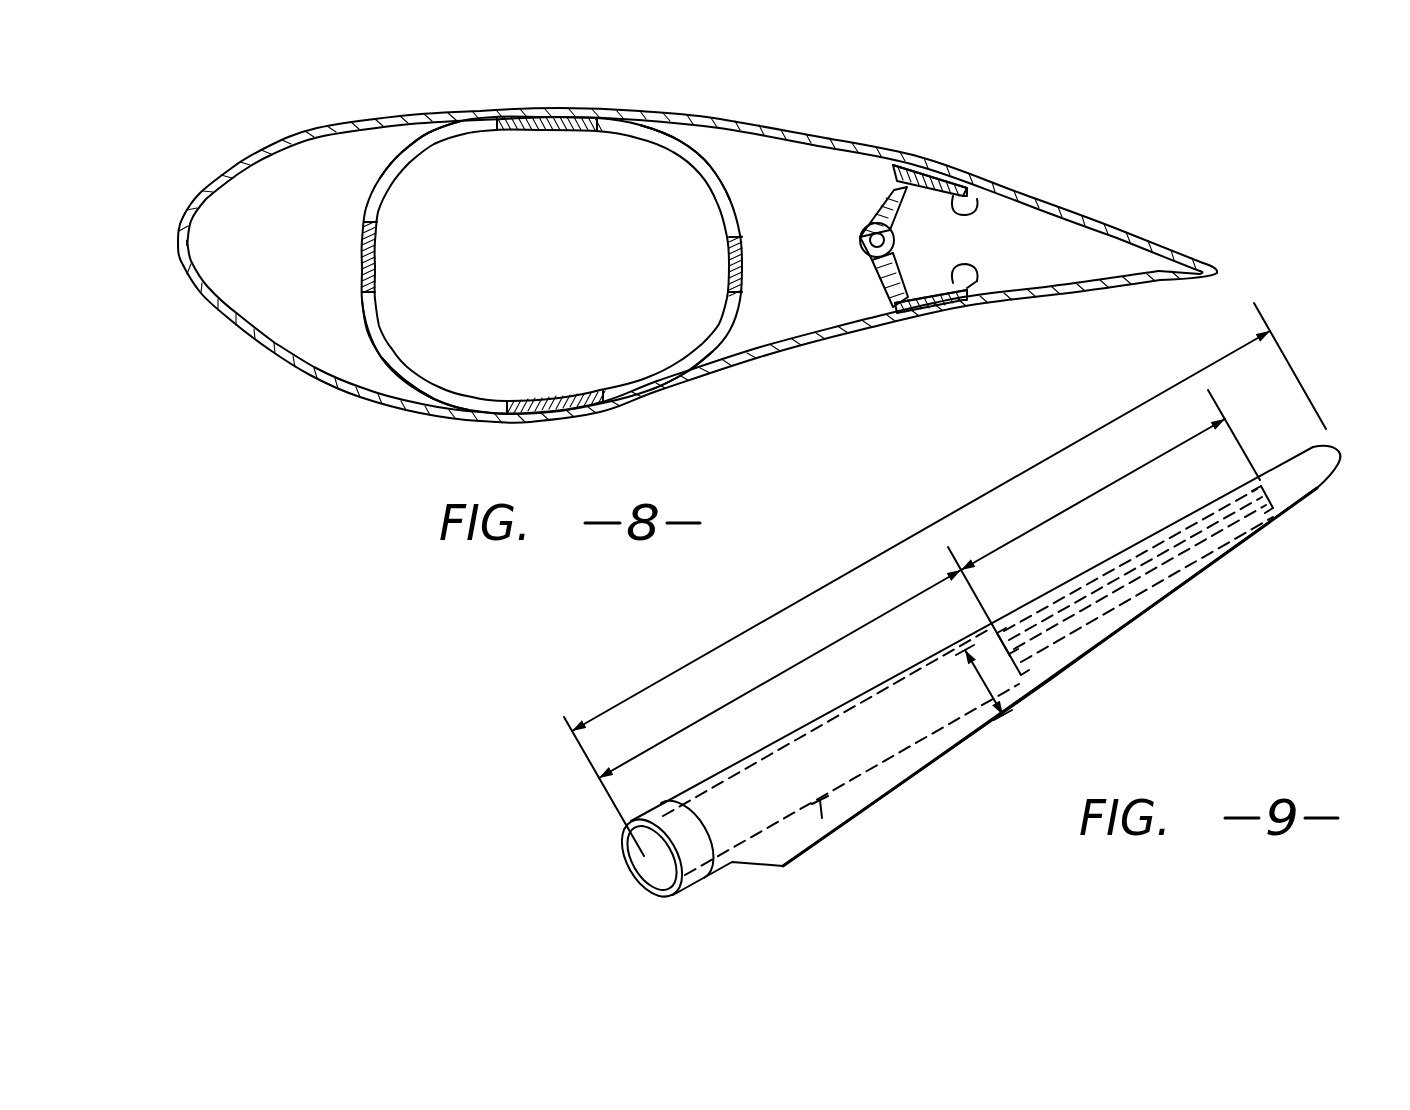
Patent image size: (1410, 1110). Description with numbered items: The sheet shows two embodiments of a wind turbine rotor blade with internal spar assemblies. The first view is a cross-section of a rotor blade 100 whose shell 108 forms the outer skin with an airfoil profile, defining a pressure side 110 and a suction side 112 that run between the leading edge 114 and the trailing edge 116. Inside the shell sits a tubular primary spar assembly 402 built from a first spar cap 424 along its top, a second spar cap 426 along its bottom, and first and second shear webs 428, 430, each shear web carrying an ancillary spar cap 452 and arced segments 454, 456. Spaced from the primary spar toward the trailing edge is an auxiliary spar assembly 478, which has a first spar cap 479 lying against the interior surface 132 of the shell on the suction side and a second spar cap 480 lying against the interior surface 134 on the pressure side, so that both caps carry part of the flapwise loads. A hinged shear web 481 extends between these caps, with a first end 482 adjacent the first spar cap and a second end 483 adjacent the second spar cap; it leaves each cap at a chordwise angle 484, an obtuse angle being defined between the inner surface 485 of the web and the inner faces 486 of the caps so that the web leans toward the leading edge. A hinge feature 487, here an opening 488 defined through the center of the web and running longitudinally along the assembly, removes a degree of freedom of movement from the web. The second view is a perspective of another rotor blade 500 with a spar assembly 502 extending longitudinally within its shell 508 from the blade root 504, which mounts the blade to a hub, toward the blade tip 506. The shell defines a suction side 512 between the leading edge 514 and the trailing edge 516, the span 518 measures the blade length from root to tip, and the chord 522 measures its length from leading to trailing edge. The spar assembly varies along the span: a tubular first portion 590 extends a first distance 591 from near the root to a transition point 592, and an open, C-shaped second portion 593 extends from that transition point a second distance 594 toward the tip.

In FIG. 8, the rotor blade 100 is at (1232, 172).
In FIG. 8, the shell 108 is at (868, 200).
In FIG. 8, the pressure side 110 is at (743, 367).
In FIG. 8, the suction side 112 is at (667, 113).
In FIG. 8, the leading edge 114 is at (178, 247).
In FIG. 8, the trailing edge 116 is at (1220, 276).
In FIG. 8, the interior surface 132 is at (233, 180).
In FIG. 8, the interior surface 134 is at (240, 327).
In FIG. 8, the primary spar assembly 402 is at (365, 160).
In FIG. 8, the first spar cap 424 is at (550, 112).
In FIG. 8, the second spar cap 426 is at (557, 422).
In FIG. 8, the first shear web 428 is at (373, 359).
In FIG. 8, the second shear web 430 is at (735, 178).
In FIG. 8, the ancillary spar cap 452 is at (365, 250).
In FIG. 8, the arced segment 454 is at (423, 150).
In FIG. 8, the arced segment 456 is at (420, 385).
In FIG. 8, the auxiliary spar assembly 478 is at (976, 234).
In FIG. 8, the first spar cap 479 is at (948, 160).
In FIG. 8, the second spar cap 480 is at (920, 309).
In FIG. 8, the hinged shear web 481 is at (905, 167).
In FIG. 8, the first end 482 is at (900, 215).
In FIG. 8, the second end 483 is at (895, 296).
In FIG. 8, the chordwise angle 484 is at (1040, 234).
In FIG. 8, the inner surface 485 is at (905, 262).
In FIG. 8, the inner face 486 is at (975, 192).
In FIG. 8, the hinge feature 487 is at (850, 255).
In FIG. 8, the opening 488 is at (858, 236).
In FIG. 9, the rotor blade 500 is at (1245, 688).
In FIG. 9, the spar assembly 502 is at (930, 744).
In FIG. 9, the blade root 504 is at (650, 817).
In FIG. 9, the blade tip 506 is at (1338, 448).
In FIG. 9, the shell 508 is at (1135, 612).
In FIG. 9, the suction side 512 is at (882, 796).
In FIG. 9, the leading edge 514 is at (850, 697).
In FIG. 9, the trailing edge 516 is at (1082, 665).
In FIG. 9, the span 518 is at (893, 547).
In FIG. 9, the chord 522 is at (973, 692).
In FIG. 9, the first portion 590 is at (826, 838).
In FIG. 9, the first distance 591 is at (810, 660).
In FIG. 9, the transition point 592 is at (1030, 640).
In FIG. 9, the second portion 593 is at (1200, 547).
In FIG. 9, the second distance 594 is at (1110, 480).